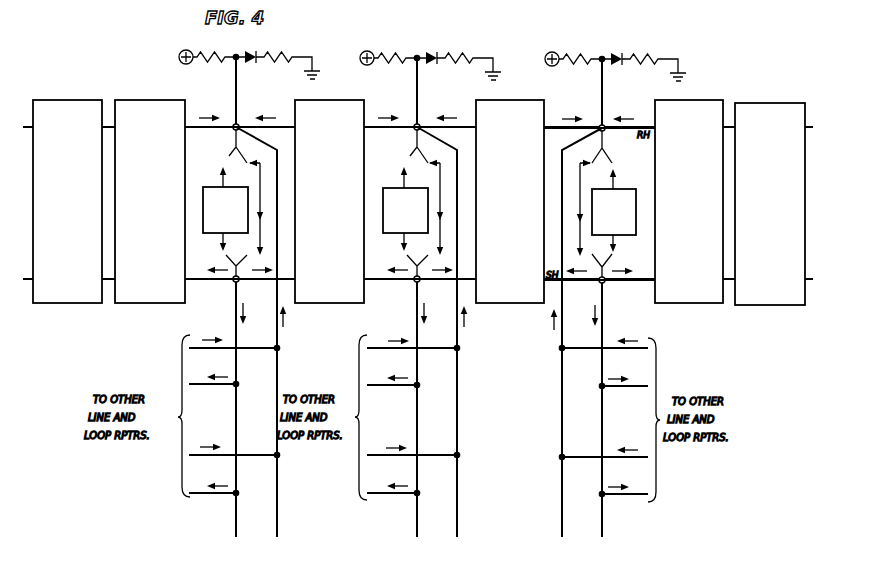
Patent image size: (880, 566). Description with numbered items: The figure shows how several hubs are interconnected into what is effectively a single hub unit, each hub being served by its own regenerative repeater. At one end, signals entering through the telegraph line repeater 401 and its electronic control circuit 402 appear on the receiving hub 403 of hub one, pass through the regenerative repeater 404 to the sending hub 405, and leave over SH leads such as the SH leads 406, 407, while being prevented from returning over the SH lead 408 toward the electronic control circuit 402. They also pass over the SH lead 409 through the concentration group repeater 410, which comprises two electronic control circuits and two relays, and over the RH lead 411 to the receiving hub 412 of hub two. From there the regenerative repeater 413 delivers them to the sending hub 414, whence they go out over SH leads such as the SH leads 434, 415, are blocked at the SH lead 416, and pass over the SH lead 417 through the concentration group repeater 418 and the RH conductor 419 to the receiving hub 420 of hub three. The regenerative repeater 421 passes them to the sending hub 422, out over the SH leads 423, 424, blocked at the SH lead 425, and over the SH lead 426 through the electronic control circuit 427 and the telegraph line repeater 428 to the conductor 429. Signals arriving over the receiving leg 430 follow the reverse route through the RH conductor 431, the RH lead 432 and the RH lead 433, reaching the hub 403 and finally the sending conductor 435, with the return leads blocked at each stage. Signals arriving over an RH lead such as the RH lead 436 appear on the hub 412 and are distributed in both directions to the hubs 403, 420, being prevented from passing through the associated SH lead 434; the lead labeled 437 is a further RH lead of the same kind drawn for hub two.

The telegraph line repeater 401 is at (770, 204).
The electronic control circuit 402 is at (689, 201).
The receiving hub 403 is at (604, 127).
The regenerative repeater 404 is at (628, 236).
The sending hub 405 is at (599, 283).
The SH lead 406 is at (617, 388).
The SH lead 407 is at (617, 496).
The SH lead 408 is at (640, 283).
The SH lead 409 is at (543, 304).
The concentration group repeater 410 is at (510, 201).
The RH lead 411 is at (420, 126).
The receiving hub 412 is at (416, 125).
The regenerative repeater 413 is at (385, 233).
The sending hub 414 is at (419, 282).
The SH lead 415 is at (385, 495).
The SH lead 416 is at (464, 281).
The SH lead 417 is at (376, 281).
The concentration group repeater 418 is at (329, 201).
The RH conductor 419 is at (282, 126).
The receiving hub 420 is at (236, 126).
The regenerative repeater 421 is at (205, 233).
The sending hub 422 is at (238, 282).
The SH lead 423 is at (205, 386).
The SH lead 424 is at (205, 495).
The SH lead 425 is at (297, 281).
The SH lead 426 is at (200, 281).
The electronic control circuit 427 is at (150, 201).
The telegraph line repeater 428 is at (67, 201).
The conductor 429 is at (26, 281).
The receiving leg 430 is at (25, 126).
The RH conductor 431 is at (191, 126).
The RH lead 432 is at (370, 126).
The RH lead 433 is at (557, 127).
The SH lead 434 is at (389, 387).
The sending conductor 435 is at (810, 281).
The RH lead 436 is at (407, 349).
The receive hub lead 437 is at (378, 457).